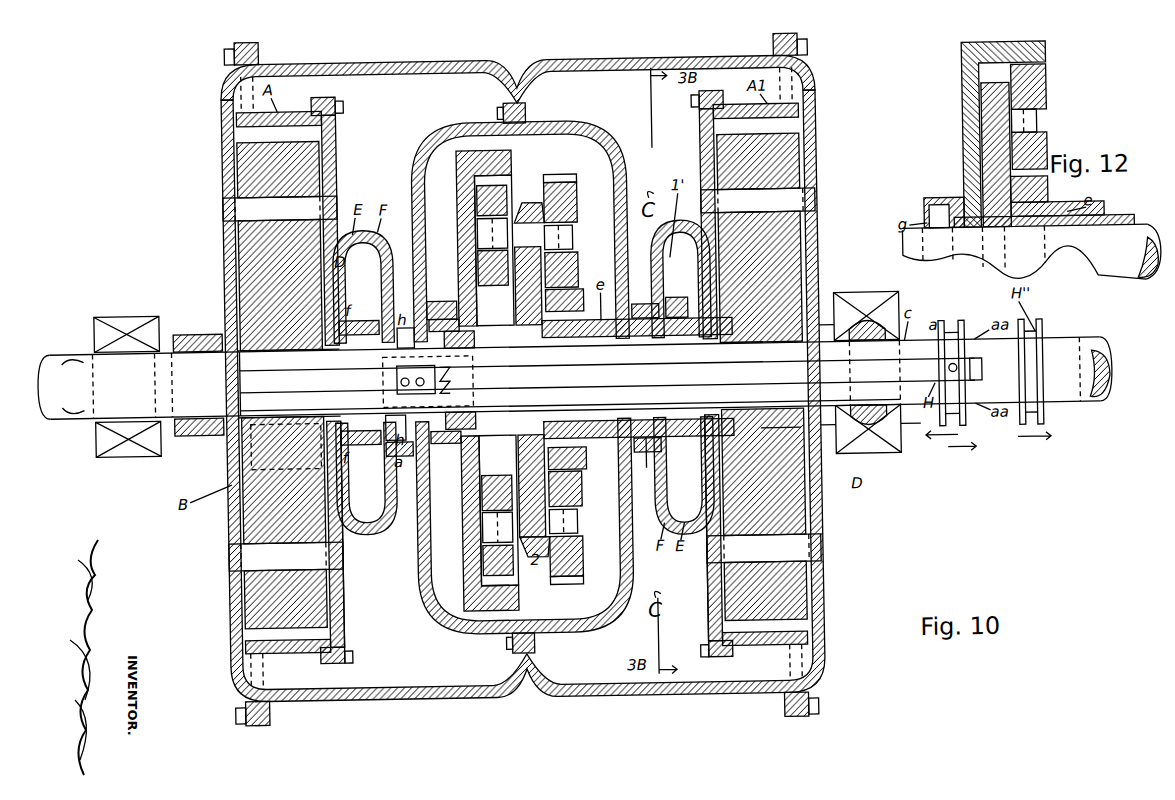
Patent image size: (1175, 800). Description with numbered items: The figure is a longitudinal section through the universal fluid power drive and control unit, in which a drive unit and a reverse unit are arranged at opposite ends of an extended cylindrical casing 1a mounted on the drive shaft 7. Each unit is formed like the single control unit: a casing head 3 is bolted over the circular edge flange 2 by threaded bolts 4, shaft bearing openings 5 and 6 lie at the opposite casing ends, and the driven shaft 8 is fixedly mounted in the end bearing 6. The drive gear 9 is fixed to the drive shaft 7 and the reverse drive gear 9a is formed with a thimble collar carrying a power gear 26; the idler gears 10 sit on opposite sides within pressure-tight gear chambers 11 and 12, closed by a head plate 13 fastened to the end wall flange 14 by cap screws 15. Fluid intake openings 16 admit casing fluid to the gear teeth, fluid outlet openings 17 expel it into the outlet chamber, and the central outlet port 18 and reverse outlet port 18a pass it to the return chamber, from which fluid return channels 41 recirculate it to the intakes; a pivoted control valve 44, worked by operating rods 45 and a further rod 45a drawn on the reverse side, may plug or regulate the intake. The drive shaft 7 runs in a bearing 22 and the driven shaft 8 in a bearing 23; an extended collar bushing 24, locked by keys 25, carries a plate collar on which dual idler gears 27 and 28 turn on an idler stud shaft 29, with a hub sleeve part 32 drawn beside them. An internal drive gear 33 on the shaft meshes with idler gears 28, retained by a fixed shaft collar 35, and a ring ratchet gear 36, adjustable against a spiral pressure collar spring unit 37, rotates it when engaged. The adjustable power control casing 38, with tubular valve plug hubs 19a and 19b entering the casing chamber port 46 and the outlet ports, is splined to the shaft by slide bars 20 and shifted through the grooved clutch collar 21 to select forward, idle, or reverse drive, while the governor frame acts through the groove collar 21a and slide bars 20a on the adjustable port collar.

In FIG. 10, the extended cylindrical casing 1a is at (440, 60).
In FIG. 10, the circular edge flange 2 is at (262, 46).
In FIG. 10, the casing head 3 is at (226, 500).
In FIG. 10, the threaded bolts 4 is at (230, 52).
In FIG. 10, the shaft bearing opening 5 is at (830, 450).
In FIG. 10, the shaft bearing opening 6 is at (205, 329).
In FIG. 10, the drive shaft 7 is at (940, 347).
In FIG. 12, the drive shaft 7 is at (1105, 285).
In FIG. 10, the driven shaft section 8 is at (72, 355).
In FIG. 10, the drive gear 9 is at (208, 456).
In FIG. 10, the drive gear of reverse unit 9a is at (740, 330).
In FIG. 10, the idler gears 10 is at (260, 160).
In FIG. 10, the central gear chamber 11 is at (240, 465).
In FIG. 10, the gear chambers 12 is at (238, 188).
In FIG. 10, the head plate 13 is at (340, 600).
In FIG. 10, the end wall flange 14 is at (322, 100).
In FIG. 10, the cap screws 15 is at (348, 104).
In FIG. 10, the fluid intake openings 16 is at (522, 379).
In FIG. 10, the fluid outlet openings 17 is at (340, 262).
In FIG. 10, the central outlet port 18 is at (380, 320).
In FIG. 10, the fluid outlet port of reverse unit 18a is at (672, 300).
In FIG. 10, the tubular valve plug hub 19a is at (396, 440).
In FIG. 10, the tubular valve plug hub 19b is at (645, 470).
In FIG. 10, the slide bars 20 is at (915, 366).
In FIG. 10, the slide bars 20a is at (988, 436).
In FIG. 10, the grooved clutch collar 21 is at (965, 335).
In FIG. 10, the groove collar 21a is at (1035, 328).
In FIG. 10, the bearing 22 is at (875, 459).
In FIG. 10, the bearing 23 is at (118, 310).
In FIG. 10, the extended collar bushing 24 is at (900, 430).
In FIG. 12, the extended collar bushing 24 is at (1110, 228).
In FIG. 10, the keys 25 is at (867, 330).
In FIG. 10, the power gear 26 is at (585, 460).
In FIG. 12, the power gear 26 is at (1051, 200).
In FIG. 10, the reverse idler gear 27 is at (580, 200).
In FIG. 12, the reverse idler gear 27 is at (1045, 108).
In FIG. 10, the reverse idler gear 28 is at (505, 195).
In FIG. 10, the idler stud shaft 29 is at (575, 236).
In FIG. 12, the idler stud shaft 29 is at (1041, 132).
In FIG. 10, the hub sleeve 32 is at (538, 203).
In FIG. 12, the hub sleeve 32 is at (990, 97).
In FIG. 10, the internal drive gear 33 is at (462, 188).
In FIG. 12, the internal drive gear 33 is at (967, 70).
In FIG. 10, the fixed shaft collar 35 is at (446, 405).
In FIG. 10, the ring ratchet gear 36 is at (414, 326).
In FIG. 10, the spiral pressure collar spring unit 37 is at (458, 430).
In FIG. 10, the adjustable power control casing 38 is at (430, 156).
In FIG. 10, the fluid return channels 41 is at (680, 240).
In FIG. 10, the pivoted control valve 44 is at (300, 465).
In FIG. 10, the operating rods 45 is at (640, 306).
In FIG. 10, the bracket 45a is at (775, 440).
In FIG. 10, the casing chamber port 46 is at (420, 318).